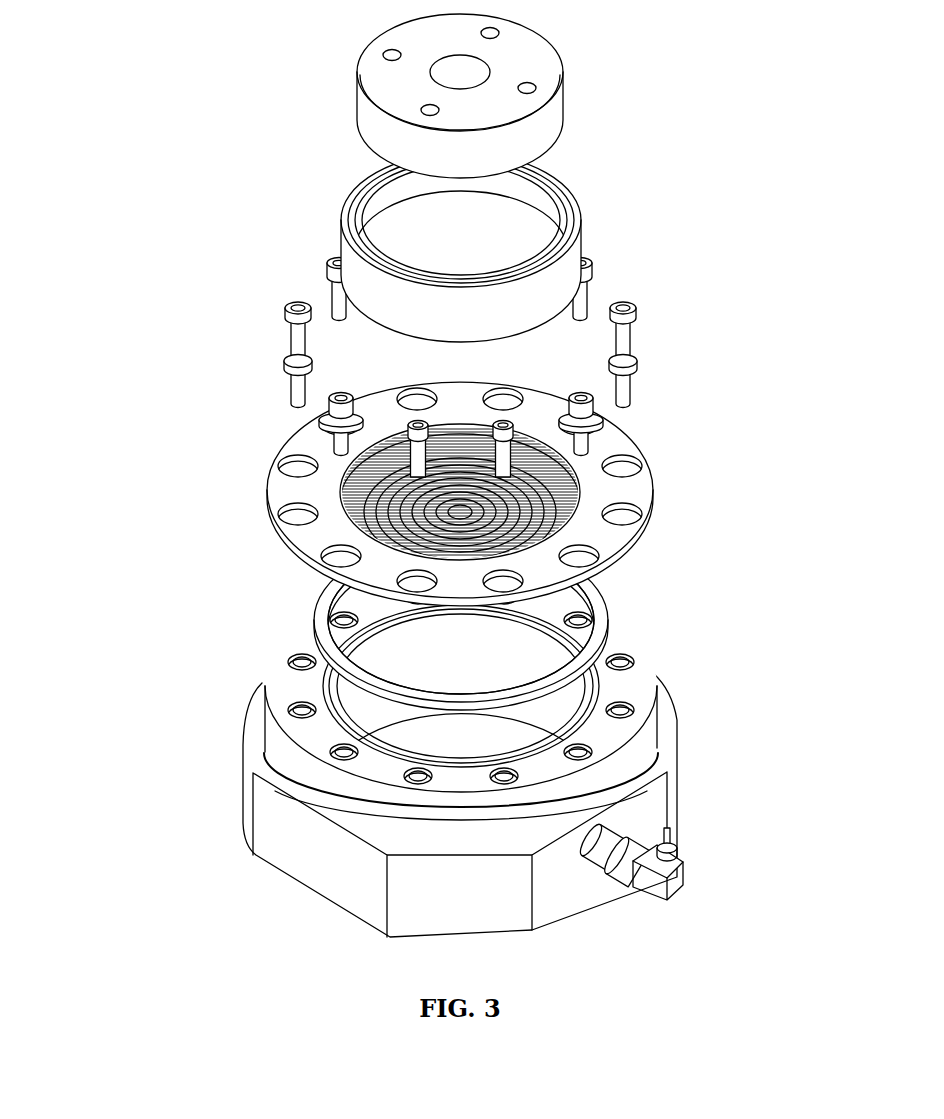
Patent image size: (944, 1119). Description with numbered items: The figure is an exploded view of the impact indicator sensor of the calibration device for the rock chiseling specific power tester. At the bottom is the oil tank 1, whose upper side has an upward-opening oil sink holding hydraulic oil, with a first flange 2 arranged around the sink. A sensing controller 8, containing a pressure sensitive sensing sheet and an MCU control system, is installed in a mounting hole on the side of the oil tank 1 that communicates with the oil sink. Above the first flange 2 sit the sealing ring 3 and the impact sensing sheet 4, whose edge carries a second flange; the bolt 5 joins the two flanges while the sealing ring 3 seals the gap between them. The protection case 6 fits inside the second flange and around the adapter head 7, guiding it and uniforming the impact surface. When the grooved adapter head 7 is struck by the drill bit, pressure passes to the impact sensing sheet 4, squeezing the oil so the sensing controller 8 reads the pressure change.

The oil tank 1 is at (62, 677).
The first flange 2 is at (57, 572).
The sealing ring 3 is at (60, 446).
The impact sensing sheet 4 is at (88, 372).
The bolt 5 is at (95, 233).
The protection case 6 is at (70, 149).
The adapter head 7 is at (98, 0).
The sensing controller 8 is at (833, 587).